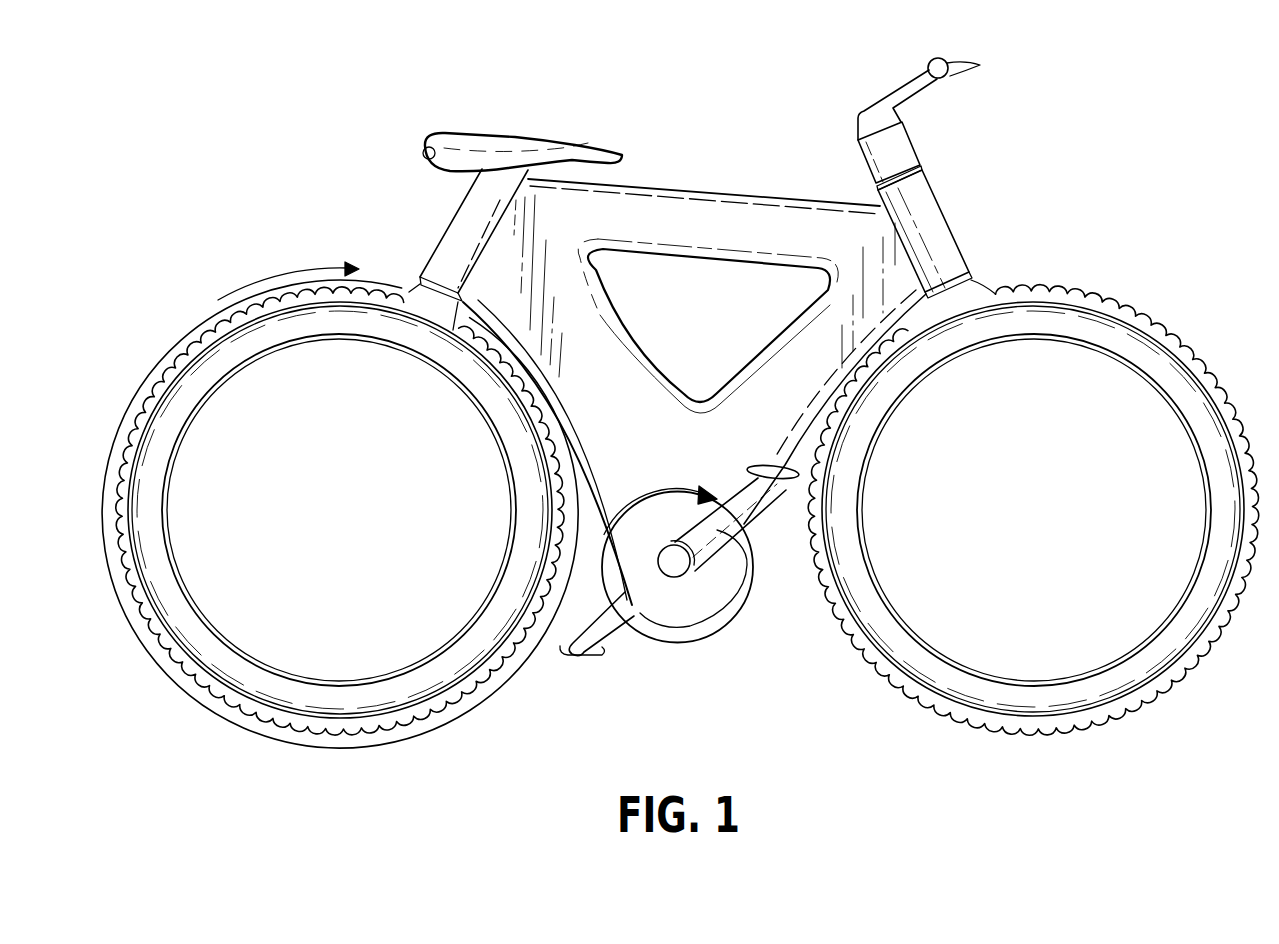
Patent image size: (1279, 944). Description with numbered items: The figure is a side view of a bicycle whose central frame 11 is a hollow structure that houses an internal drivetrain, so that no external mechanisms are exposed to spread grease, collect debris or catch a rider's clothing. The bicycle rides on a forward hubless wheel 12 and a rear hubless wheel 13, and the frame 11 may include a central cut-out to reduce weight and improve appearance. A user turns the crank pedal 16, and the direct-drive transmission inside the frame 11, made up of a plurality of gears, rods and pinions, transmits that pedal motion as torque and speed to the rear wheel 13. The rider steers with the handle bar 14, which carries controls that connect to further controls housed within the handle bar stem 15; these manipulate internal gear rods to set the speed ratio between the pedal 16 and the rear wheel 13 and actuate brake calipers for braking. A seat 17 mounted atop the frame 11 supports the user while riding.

The frame 11 is at (727, 220).
The forward hubless wheel 12 is at (1148, 358).
The rear hubless wheel 13 is at (220, 362).
The handle bar 14 is at (940, 78).
The handle bar stem 15 is at (932, 237).
The crank pedal 16 is at (743, 580).
The seat 17 is at (518, 146).